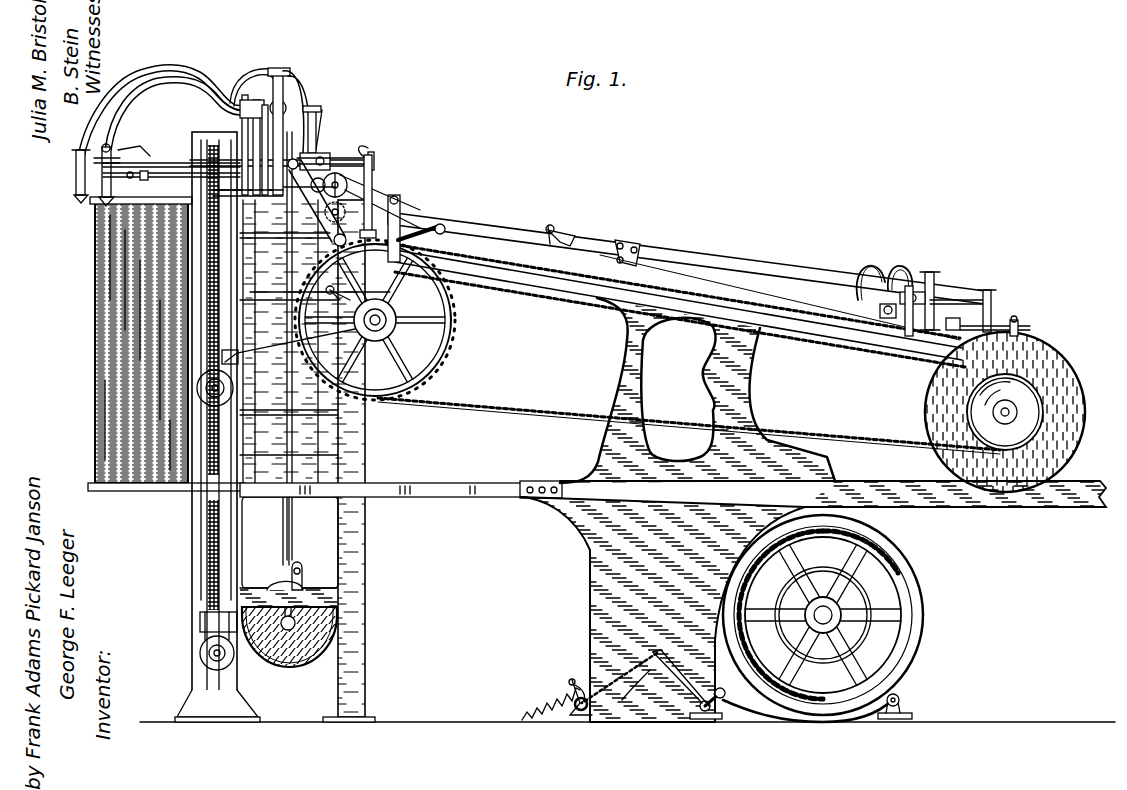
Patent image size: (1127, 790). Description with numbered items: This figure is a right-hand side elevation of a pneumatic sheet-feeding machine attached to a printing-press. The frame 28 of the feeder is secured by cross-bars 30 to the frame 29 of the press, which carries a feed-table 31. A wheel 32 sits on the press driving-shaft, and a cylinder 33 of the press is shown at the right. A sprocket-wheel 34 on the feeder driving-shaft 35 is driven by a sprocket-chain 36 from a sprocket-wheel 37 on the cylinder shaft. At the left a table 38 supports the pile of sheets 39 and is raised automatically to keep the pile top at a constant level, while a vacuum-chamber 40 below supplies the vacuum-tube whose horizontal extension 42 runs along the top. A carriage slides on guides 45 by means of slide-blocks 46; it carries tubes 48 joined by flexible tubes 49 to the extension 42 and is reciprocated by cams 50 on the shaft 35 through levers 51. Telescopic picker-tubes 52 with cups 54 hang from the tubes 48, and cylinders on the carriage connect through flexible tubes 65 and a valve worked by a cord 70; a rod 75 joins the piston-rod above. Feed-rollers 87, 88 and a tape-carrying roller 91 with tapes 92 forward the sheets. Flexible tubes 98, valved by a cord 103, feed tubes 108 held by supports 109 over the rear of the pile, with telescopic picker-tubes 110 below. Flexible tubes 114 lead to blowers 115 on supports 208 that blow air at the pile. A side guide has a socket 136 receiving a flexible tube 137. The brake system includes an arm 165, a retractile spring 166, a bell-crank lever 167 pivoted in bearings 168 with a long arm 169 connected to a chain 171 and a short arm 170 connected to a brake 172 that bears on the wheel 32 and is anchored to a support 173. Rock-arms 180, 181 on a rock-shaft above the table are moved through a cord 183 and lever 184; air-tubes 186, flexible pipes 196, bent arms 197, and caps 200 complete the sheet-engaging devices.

The frame 28 is at (258, 455).
The frame of a printing-press 29 is at (813, 510).
The cross-bars 30 is at (452, 491).
The feed-table 31 is at (800, 340).
The wheel 32 is at (910, 590).
The cylinder 33 is at (1005, 412).
The sprocket-wheel 34 is at (445, 347).
The driving-shaft 35 is at (397, 322).
The sprocket-chain 36 is at (548, 406).
The sprocket-wheel 37 is at (1005, 412).
The table 38 is at (160, 492).
The pile of sheets 39 is at (141, 340).
The vacuum-chamber 40 is at (288, 614).
The horizontal extension 42 is at (272, 102).
The guides 45 is at (338, 175).
The slide-blocks 46 is at (318, 155).
The tubes 48 is at (283, 70).
The flexible tubes 49 is at (318, 112).
The cams 50 is at (385, 327).
The levers 51 is at (340, 295).
The telescopic picker-tubes 52 is at (300, 158).
The cups 54 is at (125, 180).
The flexible tubes 65 is at (298, 84).
The cord 70 is at (245, 132).
The rod 75 is at (318, 118).
The feed-roller 87 is at (360, 158).
The feed-roller 88 is at (345, 210).
The tape-carrying roller 91 is at (372, 215).
The tapes 92 is at (455, 228).
The flexible tubes 98 is at (200, 76).
The cord 103 is at (250, 150).
The tubes 108 is at (100, 180).
The supports 109 is at (155, 158).
The telescopic picker-tubes 110 is at (104, 198).
The flexible tubes 114 is at (150, 68).
The blowers 115 is at (72, 170).
The socket 136 is at (946, 330).
The flexible tube 137 is at (932, 275).
The arm 165 is at (573, 680).
The retractile spring 166 is at (548, 700).
The bell-crank lever 167 is at (690, 660).
The bearings 168 is at (705, 712).
The long arm 169 is at (650, 668).
The short arm 170 is at (722, 690).
The chain 171 is at (628, 672).
The brake 172 is at (765, 715).
The support 173 is at (900, 700).
The rock-arm 180 is at (918, 292).
The rock-arm 181 is at (908, 330).
The cord 183 is at (565, 235).
The lever 184 is at (398, 228).
The air-tubes 186 is at (960, 300).
The flexible pipes 196 is at (875, 260).
The bent arms 197 is at (985, 320).
The caps 200 is at (1005, 300).
The supports 208 is at (150, 182).